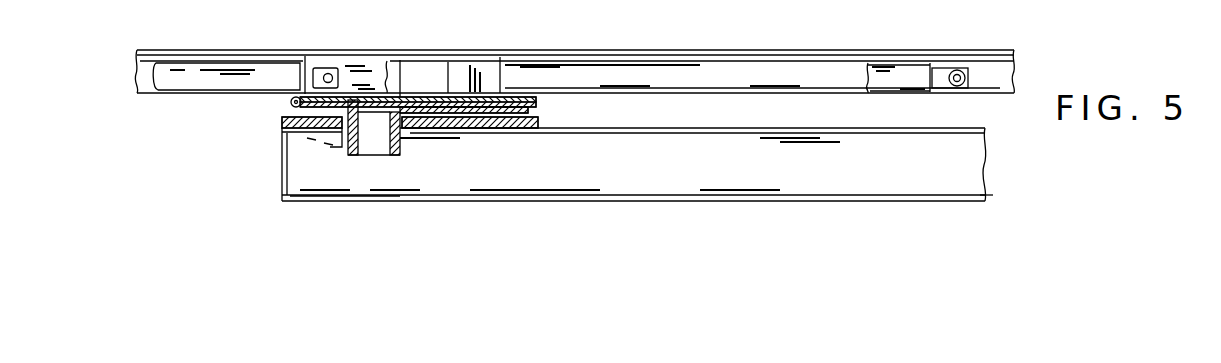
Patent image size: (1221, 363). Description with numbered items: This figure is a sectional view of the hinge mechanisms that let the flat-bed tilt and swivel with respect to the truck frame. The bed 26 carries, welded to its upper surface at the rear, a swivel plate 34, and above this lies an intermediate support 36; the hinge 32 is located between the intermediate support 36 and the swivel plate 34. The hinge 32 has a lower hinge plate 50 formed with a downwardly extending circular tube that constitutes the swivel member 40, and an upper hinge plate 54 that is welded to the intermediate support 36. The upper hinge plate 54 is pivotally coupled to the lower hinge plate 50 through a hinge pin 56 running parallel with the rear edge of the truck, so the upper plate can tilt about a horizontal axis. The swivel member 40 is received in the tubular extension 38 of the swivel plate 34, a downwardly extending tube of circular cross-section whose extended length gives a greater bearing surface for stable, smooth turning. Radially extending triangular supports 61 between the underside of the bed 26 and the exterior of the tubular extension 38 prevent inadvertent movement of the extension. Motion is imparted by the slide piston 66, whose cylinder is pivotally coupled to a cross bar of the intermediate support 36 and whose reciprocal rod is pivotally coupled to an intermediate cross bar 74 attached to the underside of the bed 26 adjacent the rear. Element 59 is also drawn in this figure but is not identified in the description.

The bed 26 is at (540, 50).
The hinge 32 is at (270, 124).
The swivel plate 34 is at (281, 152).
The intermediate support 36 is at (293, 76).
The tubular extension 38 is at (350, 157).
The swivel member 40 is at (400, 60).
The lower hinge plate 50 is at (543, 95).
The upper hinge plate 54 is at (498, 57).
The hinge pin 56 is at (290, 102).
The wall 59 is at (410, 142).
The triangular supports 61 is at (430, 138).
The slide piston 66 is at (947, 49).
The intermediate cross bar 74 is at (309, 60).